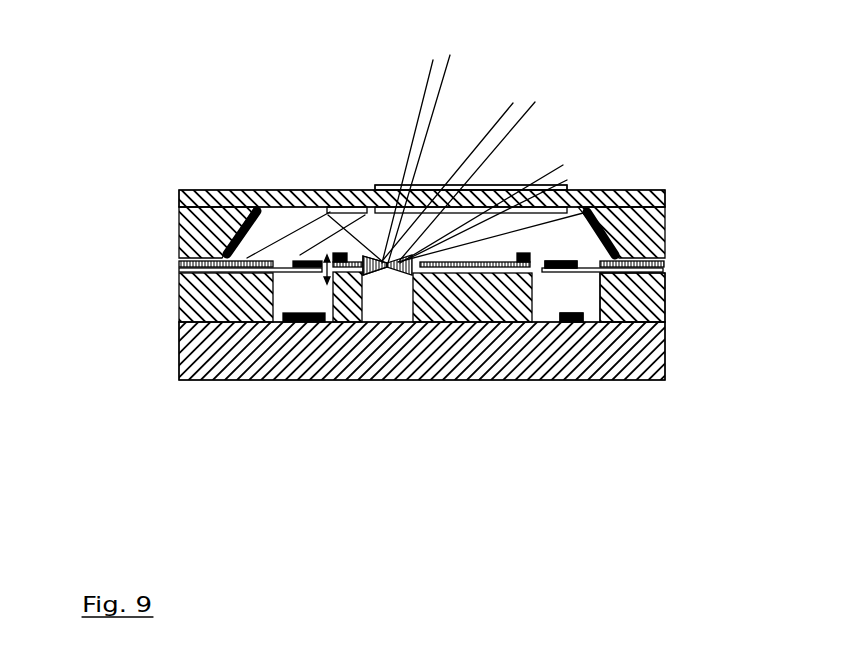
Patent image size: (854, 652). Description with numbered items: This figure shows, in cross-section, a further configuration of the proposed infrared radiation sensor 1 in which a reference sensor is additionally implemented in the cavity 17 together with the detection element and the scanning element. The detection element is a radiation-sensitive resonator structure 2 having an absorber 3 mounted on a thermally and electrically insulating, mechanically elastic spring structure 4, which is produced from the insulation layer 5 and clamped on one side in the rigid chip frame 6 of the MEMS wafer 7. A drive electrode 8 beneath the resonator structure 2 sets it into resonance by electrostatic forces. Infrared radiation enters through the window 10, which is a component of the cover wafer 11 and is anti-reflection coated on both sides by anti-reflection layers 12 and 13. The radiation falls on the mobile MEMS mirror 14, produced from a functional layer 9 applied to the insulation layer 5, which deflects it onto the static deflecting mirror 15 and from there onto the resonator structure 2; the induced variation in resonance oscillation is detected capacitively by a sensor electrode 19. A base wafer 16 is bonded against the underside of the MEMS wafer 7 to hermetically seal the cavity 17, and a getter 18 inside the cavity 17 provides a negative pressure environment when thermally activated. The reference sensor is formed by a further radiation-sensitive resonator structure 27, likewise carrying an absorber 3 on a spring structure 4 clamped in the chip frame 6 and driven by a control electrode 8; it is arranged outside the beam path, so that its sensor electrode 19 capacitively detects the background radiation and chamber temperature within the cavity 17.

The infrared radiation sensor 1 is at (665, 383).
The radiation-sensitive resonator structure 2 is at (310, 272).
The absorber 3 is at (322, 258).
The spring structure 4 is at (275, 266).
The insulation layer 5 is at (663, 273).
The chip frame 6 is at (180, 292).
The MEMS wafer 7 is at (600, 311).
The drive electrode 8 is at (283, 323).
The functional layer 9 is at (179, 263).
The window 10 is at (480, 190).
The cover wafer 11 is at (194, 218).
The anti-reflection layer 12 is at (383, 183).
The anti-reflection layer 13 is at (530, 253).
The mobile MEMS mirror 14 is at (383, 272).
The static deflecting mirror 15 is at (344, 255).
The base wafer 16 is at (570, 363).
The cavity 17 is at (405, 313).
The getter 18 is at (260, 207).
The sensor electrode 19 is at (284, 258).
The radiation-sensitive resonator structure 27 is at (580, 272).